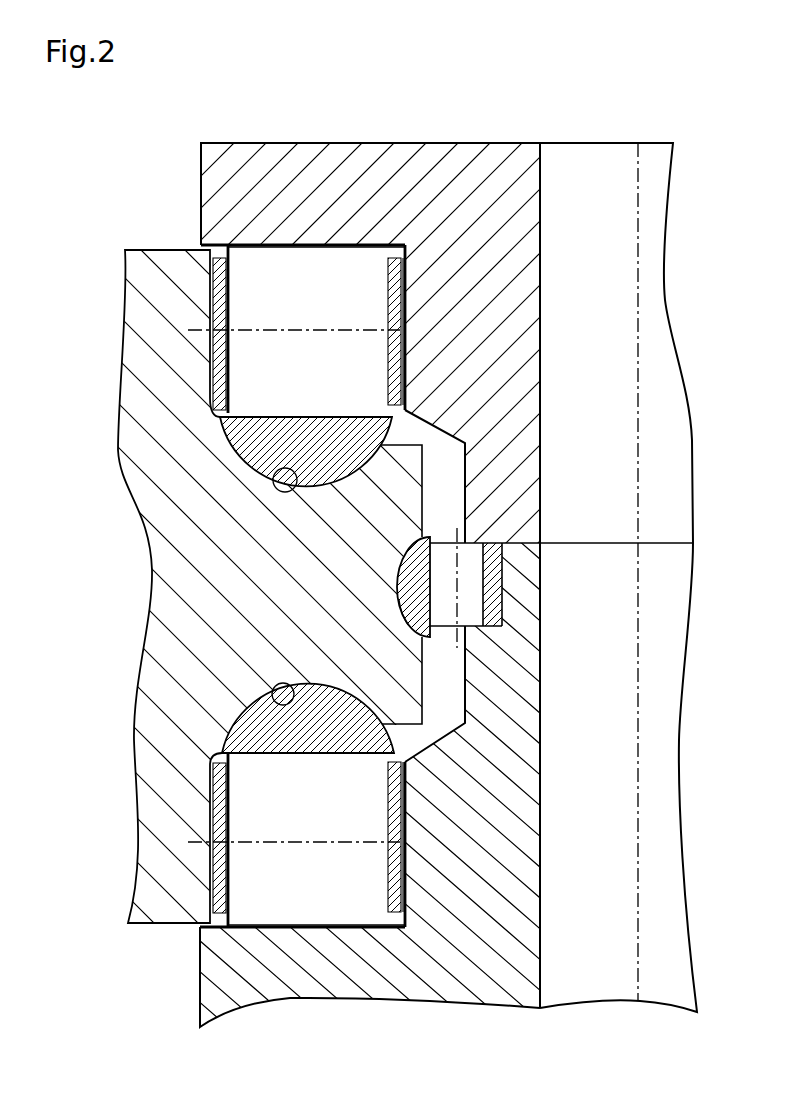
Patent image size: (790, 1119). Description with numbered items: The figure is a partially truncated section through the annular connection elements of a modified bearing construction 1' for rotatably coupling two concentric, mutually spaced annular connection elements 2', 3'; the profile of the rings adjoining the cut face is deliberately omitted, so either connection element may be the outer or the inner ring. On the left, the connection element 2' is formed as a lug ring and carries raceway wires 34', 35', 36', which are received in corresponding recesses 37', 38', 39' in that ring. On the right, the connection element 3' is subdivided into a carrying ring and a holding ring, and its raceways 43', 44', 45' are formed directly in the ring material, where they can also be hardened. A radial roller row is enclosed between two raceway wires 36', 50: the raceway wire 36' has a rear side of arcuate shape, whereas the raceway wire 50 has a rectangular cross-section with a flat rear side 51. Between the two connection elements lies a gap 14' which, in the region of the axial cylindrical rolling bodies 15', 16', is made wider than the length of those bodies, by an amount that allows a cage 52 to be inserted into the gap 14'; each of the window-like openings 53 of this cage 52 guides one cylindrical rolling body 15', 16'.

The bearing construction 1' is at (449, 515).
The connection element 2' is at (148, 586).
The connection element 3' is at (561, 610).
The gap 14' is at (404, 718).
The axial cylindrical rolling body 15' is at (236, 329).
The axial cylindrical rolling body 16' is at (236, 840).
The raceway wire 34' is at (230, 451).
The raceway wire 35' is at (231, 719).
The raceway wire 36' is at (377, 587).
The recess 37' is at (182, 480).
The recess 38' is at (181, 699).
The recess 39' is at (368, 610).
The raceway 43' is at (316, 171).
The raceway 44' is at (316, 993).
The raceway 45' is at (521, 588).
The raceway wire 50 is at (498, 608).
The flat rear side 51 is at (500, 615).
The cage 52 is at (395, 292).
The window-like opening 53 is at (388, 273).